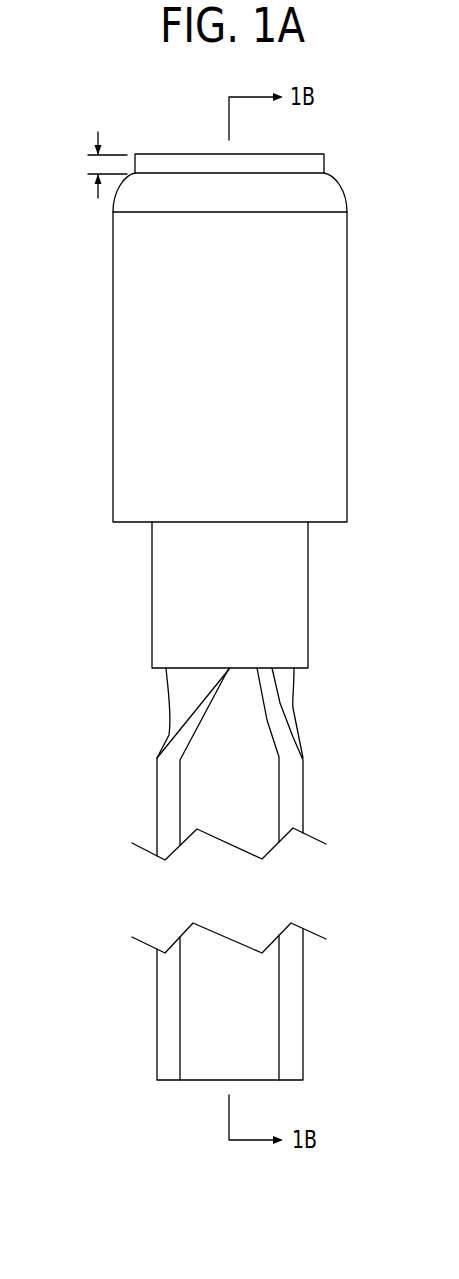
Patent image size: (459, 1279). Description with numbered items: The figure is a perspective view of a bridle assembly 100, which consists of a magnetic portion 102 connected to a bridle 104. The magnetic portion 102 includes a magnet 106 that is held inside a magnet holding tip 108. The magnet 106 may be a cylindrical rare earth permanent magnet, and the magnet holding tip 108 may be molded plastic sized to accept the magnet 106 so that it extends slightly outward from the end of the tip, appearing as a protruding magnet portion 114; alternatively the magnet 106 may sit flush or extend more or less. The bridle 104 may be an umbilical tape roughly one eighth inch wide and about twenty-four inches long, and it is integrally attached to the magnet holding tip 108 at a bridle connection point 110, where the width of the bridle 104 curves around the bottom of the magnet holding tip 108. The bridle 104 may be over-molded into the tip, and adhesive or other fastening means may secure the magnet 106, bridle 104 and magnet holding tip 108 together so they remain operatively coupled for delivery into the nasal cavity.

The bridle assembly 100 is at (170, 125).
The magnetic portion 102 is at (392, 465).
The bridle 104 is at (290, 815).
The magnet 106 is at (311, 155).
The magnet holding tip 108 is at (313, 331).
The bridle connection point 110 is at (333, 664).
The protruding magnet portion 114 is at (93, 165).